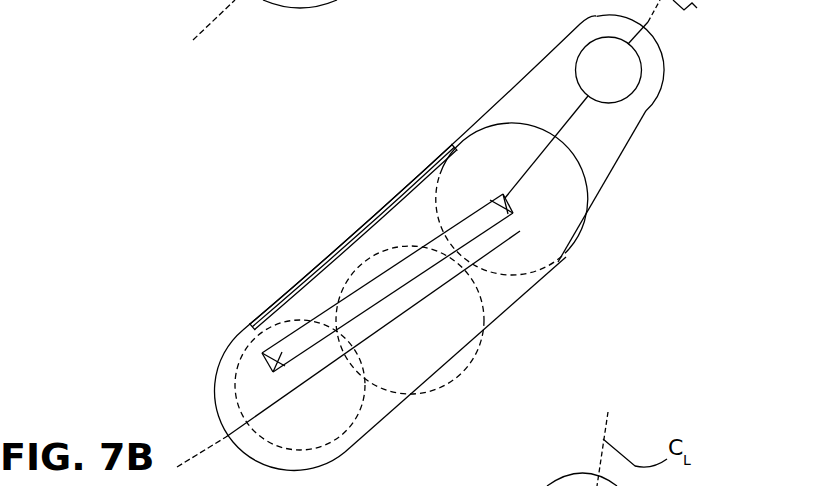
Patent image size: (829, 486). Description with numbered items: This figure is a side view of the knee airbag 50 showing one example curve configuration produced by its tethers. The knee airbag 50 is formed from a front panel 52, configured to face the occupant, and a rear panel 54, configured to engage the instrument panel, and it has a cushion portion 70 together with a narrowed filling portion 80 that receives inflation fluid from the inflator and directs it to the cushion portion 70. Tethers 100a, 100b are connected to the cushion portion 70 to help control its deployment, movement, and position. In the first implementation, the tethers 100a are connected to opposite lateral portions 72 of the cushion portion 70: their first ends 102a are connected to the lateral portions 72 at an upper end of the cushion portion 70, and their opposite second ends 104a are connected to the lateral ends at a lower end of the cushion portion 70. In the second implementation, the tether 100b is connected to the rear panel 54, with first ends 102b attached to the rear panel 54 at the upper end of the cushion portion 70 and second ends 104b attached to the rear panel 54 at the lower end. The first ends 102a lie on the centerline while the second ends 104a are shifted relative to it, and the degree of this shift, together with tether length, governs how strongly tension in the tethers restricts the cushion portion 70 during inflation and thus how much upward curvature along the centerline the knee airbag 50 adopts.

The knee airbag 50 is at (292, 210).
The front panel 52 is at (418, 235).
The rear panel 54 is at (295, 205).
The cushion portion 70 is at (425, 342).
The lateral portions 72 is at (233, 352).
The filling portion 80 is at (597, 120).
The tethers 100a is at (401, 318).
The tethers 100b is at (295, 205).
The first ends 102a is at (513, 213).
The first ends 102b is at (446, 150).
The second ends 104a is at (260, 354).
The second ends 104b is at (250, 322).